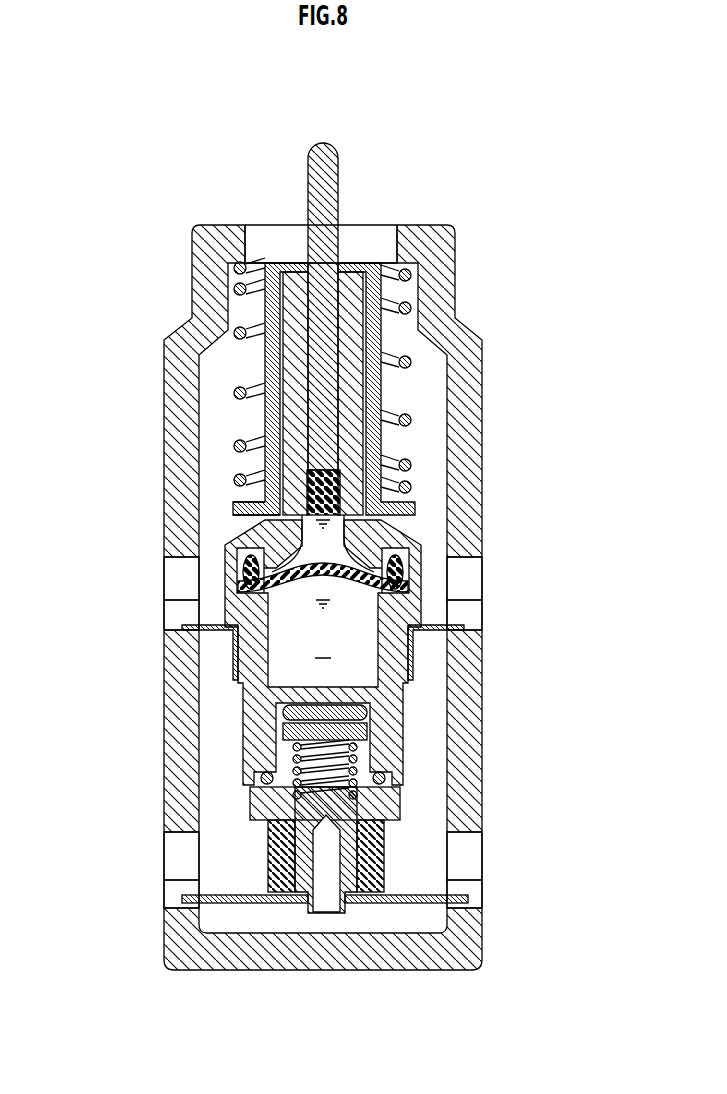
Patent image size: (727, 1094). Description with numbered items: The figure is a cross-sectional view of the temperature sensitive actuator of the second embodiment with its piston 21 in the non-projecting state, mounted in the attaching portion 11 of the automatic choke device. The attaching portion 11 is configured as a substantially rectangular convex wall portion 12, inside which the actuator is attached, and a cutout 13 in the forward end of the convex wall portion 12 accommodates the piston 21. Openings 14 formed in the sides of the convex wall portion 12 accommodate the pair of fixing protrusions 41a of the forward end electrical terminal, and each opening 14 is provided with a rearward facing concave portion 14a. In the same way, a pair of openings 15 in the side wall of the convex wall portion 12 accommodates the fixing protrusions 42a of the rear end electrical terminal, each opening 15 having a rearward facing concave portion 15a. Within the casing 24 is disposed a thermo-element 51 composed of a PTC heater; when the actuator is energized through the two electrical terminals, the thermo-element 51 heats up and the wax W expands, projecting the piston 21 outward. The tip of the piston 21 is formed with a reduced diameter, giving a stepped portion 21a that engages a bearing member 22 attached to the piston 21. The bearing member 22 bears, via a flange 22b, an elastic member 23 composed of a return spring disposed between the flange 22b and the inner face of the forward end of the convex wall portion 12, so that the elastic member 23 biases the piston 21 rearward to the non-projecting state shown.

The attaching portion 11 is at (481, 181).
The convex wall portion 12 is at (447, 273).
The cutout 13 is at (360, 235).
The piston 21 is at (319, 143).
The stepped portion 21a is at (307, 270).
The bearing member 22 is at (272, 362).
The flange 22b is at (240, 500).
The elastic member 23 is at (236, 392).
The opening 14 is at (172, 594).
The concave portion 14a is at (172, 618).
The fixing protrusion 41a is at (212, 622).
The casing 24 is at (243, 740).
The thermo-element 51 is at (350, 727).
The fixing protrusion 42a is at (215, 893).
The opening 15 is at (173, 868).
The concave portion 15a is at (173, 896).